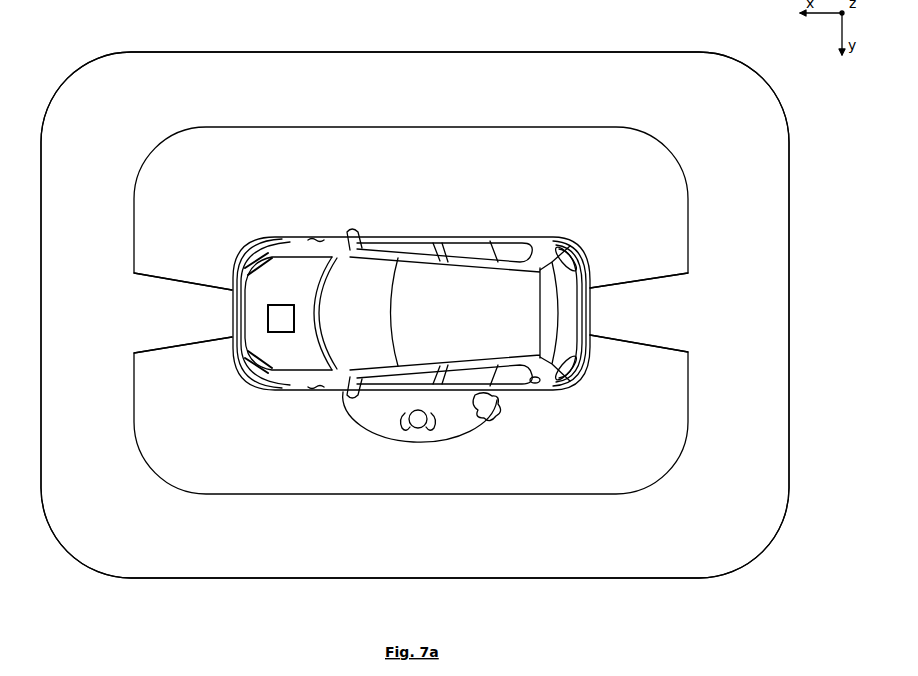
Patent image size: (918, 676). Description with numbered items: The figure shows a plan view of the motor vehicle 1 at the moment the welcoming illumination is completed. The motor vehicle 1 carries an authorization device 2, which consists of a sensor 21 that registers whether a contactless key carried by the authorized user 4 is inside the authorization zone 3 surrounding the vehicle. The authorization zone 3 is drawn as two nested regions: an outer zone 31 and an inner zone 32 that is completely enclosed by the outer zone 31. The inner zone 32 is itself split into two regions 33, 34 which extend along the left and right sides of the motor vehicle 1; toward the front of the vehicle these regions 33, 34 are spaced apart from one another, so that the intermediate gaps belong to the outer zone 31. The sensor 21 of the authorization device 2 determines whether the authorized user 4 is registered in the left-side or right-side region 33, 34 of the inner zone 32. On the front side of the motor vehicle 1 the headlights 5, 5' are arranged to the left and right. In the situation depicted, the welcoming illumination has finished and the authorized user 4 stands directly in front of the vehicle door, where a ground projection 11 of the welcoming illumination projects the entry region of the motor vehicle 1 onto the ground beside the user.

The motor vehicle 1 is at (430, 213).
The authorization device 2 is at (285, 305).
The sensor 21 is at (304, 265).
The authorization zone 3 is at (334, 52).
The outer zone 31 is at (415, 315).
The inner zone 32 is at (411, 310).
The left-side region of the inner zone 33 is at (411, 397).
The right-side region of the inner zone 34 is at (411, 229).
The authorized user 4 is at (438, 427).
The headlight 5 is at (258, 239).
The headlight 5' is at (258, 393).
The ground projection 11 is at (496, 410).